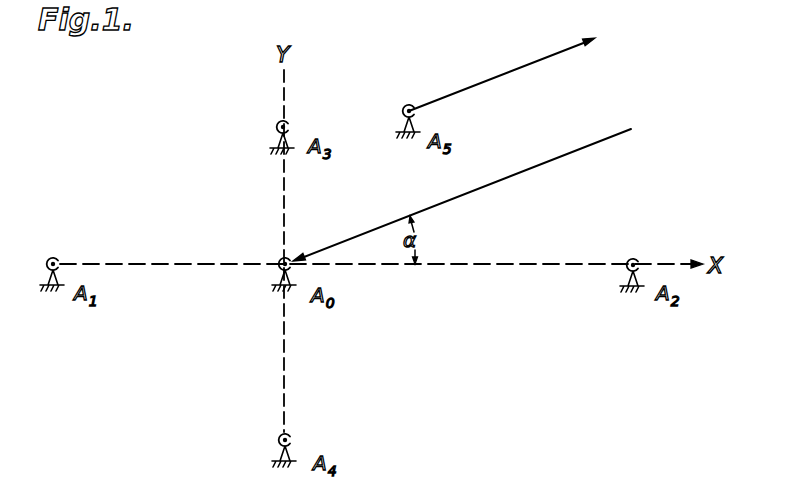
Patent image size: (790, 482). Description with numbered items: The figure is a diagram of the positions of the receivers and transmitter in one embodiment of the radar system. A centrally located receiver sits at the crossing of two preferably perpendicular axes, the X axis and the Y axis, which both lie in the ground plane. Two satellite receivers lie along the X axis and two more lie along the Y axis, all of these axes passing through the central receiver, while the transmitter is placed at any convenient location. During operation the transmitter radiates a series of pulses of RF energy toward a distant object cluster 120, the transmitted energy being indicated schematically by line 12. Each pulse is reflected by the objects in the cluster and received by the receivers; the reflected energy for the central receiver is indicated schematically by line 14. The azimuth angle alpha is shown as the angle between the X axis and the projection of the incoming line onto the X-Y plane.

The line indicating transmitted energy 12 is at (497, 74).
The line indicating reflected energy 14 is at (528, 170).
The object cluster 120 is at (650, 466).